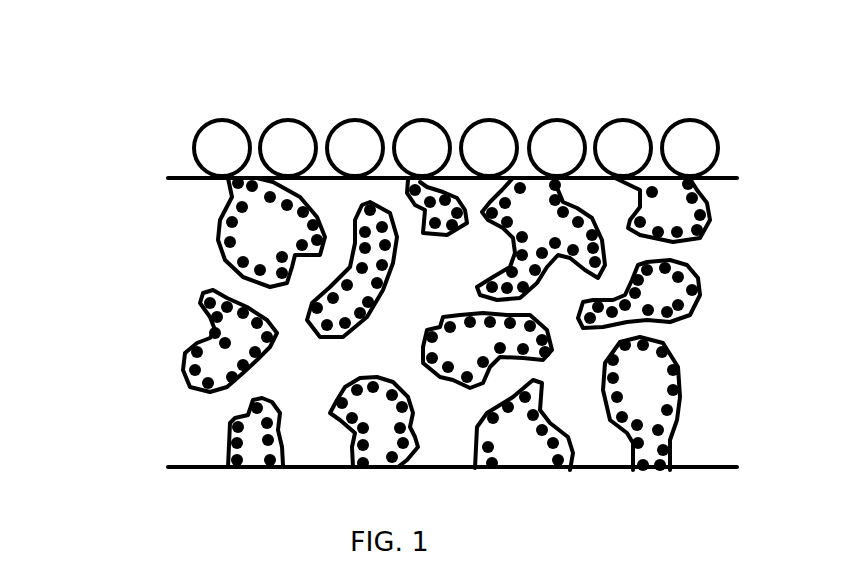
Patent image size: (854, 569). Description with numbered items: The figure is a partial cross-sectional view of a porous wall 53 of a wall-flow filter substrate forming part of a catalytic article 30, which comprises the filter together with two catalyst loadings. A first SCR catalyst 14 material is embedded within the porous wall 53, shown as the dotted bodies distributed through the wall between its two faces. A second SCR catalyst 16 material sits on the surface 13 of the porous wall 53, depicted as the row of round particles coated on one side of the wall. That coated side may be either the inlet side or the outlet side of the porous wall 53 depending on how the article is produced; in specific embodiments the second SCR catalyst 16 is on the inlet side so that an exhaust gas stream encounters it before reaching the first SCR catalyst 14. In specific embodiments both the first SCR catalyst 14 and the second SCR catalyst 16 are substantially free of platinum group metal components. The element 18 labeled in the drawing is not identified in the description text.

The catalytic article 30 is at (168, 95).
The surface 13 is at (183, 178).
The second SCR catalyst 16 is at (425, 120).
The sorbent particle 18 is at (259, 239).
The first SCR catalyst 14 is at (700, 242).
The porous wall 53 is at (199, 426).